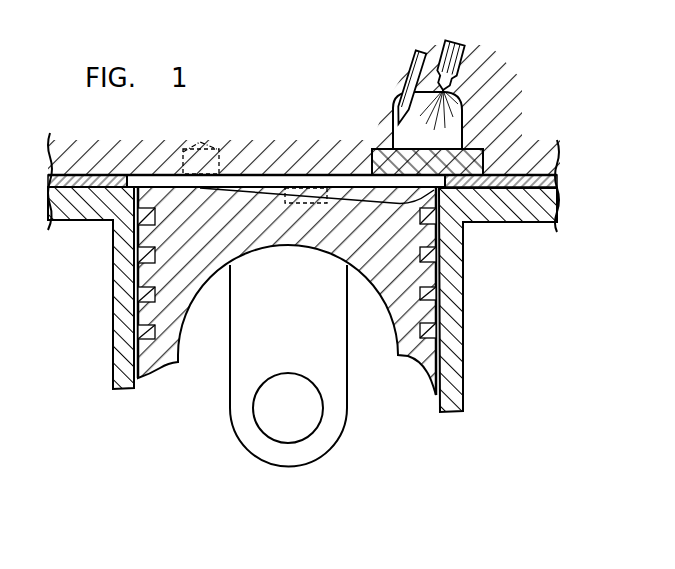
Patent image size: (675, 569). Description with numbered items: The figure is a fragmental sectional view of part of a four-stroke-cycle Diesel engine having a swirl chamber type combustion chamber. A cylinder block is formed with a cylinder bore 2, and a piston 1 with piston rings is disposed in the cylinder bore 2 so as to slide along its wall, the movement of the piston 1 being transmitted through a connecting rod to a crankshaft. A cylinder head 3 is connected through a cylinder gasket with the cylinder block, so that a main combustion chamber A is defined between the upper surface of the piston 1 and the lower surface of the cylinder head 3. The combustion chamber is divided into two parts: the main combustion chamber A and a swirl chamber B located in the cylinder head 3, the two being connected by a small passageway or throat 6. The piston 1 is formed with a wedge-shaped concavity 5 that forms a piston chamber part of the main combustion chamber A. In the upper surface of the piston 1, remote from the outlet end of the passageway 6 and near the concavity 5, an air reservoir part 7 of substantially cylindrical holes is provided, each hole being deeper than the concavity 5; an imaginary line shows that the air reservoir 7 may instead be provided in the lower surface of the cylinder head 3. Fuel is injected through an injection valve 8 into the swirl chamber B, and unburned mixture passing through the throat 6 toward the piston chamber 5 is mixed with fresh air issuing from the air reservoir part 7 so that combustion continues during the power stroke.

The piston 1 is at (377, 262).
The cylinder bore 2 is at (441, 356).
The cylinder head 3 is at (157, 154).
The wedge-shaped concavity 5 is at (403, 195).
The passageway or throat 6 is at (433, 148).
The air reservoir part 7 is at (217, 150).
The injection valve 8 is at (463, 45).
The main combustion chamber A is at (292, 186).
The swirl chamber B is at (462, 110).